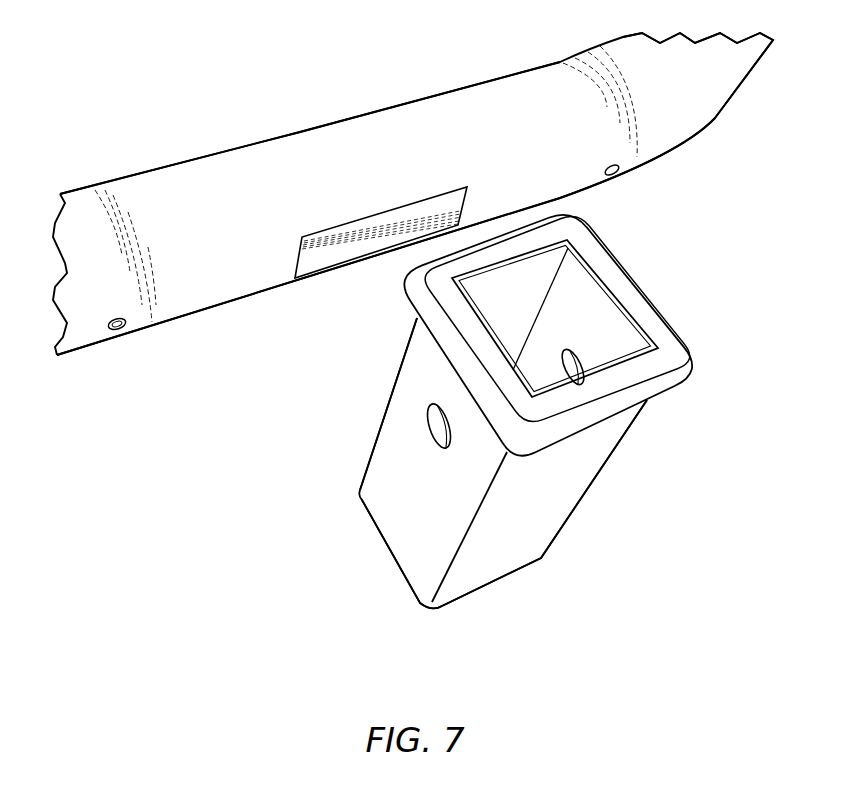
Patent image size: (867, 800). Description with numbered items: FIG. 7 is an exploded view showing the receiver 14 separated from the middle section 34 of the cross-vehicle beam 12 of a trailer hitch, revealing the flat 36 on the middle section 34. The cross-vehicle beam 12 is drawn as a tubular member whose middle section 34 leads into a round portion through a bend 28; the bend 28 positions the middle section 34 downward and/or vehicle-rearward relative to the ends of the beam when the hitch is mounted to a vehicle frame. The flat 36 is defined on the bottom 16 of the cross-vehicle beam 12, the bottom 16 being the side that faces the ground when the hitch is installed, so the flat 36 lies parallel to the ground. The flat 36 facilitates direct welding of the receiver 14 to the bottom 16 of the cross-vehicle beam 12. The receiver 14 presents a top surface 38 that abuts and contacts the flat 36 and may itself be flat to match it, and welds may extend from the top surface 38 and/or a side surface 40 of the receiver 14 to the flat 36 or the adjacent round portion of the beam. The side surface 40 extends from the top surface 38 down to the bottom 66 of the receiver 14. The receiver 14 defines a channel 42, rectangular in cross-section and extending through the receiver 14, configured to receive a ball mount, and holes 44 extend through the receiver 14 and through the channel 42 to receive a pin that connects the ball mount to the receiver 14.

The cross-vehicle beam 12 is at (168, 332).
The receiver 14 is at (516, 412).
The bottom 16 is at (260, 285).
The bend 28 is at (708, 126).
The middle section 34 is at (226, 150).
The flat 36 is at (367, 262).
The top surface 38 is at (392, 392).
The side surface 40 is at (402, 543).
The channel 42 is at (606, 306).
The holes 44 is at (585, 355).
The bottom 66 is at (557, 515).